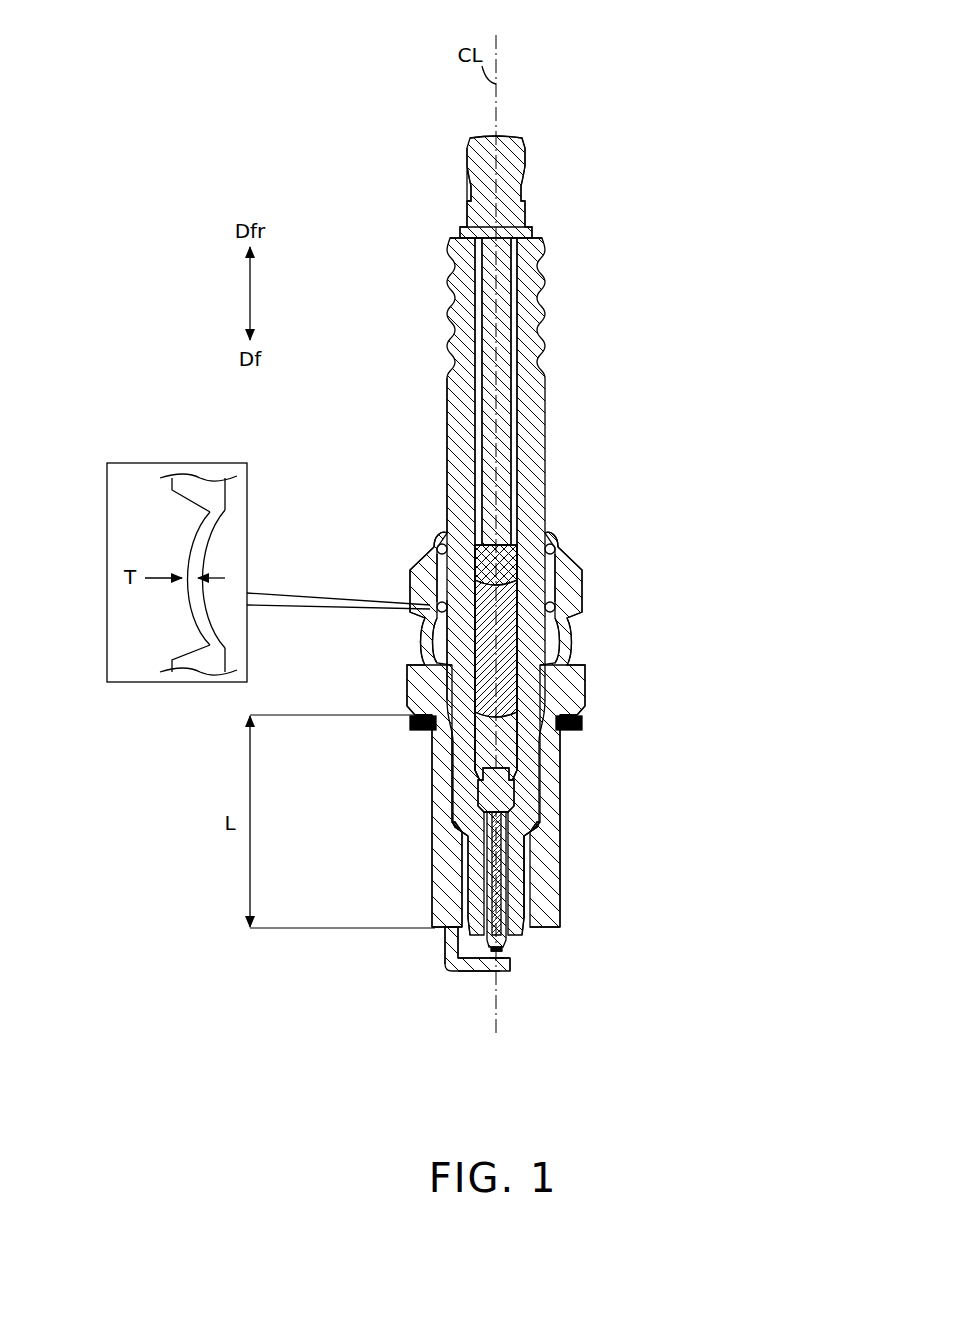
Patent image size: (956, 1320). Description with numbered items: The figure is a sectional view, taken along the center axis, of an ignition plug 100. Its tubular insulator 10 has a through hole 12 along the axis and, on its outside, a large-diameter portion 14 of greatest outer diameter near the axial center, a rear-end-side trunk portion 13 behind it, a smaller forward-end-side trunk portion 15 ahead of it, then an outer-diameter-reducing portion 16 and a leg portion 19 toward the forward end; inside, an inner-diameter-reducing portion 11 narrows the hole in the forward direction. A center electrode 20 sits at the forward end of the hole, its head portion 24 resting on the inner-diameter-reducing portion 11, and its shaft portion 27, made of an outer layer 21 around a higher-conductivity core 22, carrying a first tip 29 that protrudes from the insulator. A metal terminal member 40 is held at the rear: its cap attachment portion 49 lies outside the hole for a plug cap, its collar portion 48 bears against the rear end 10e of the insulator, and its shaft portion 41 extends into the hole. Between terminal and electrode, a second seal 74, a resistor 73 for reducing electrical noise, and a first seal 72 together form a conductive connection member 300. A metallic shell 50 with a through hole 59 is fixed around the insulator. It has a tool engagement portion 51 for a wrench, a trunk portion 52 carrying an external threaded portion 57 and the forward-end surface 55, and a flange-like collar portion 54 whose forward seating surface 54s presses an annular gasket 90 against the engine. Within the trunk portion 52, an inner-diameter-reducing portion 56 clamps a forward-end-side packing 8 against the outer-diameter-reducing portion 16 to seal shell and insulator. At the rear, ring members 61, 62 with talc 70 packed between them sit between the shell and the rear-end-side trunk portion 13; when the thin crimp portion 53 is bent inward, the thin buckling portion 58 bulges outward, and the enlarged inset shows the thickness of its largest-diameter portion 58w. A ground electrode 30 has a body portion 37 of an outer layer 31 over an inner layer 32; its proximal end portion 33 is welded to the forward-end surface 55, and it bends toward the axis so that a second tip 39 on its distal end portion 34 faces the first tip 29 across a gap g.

The ignition plug 100 is at (372, 108).
The insulator 10 is at (548, 355).
The rear end of insulator 10e is at (535, 238).
The through hole 12 is at (478, 458).
The rear-end-side trunk portion 13 is at (449, 467).
The large-diameter portion 14 is at (447, 640).
The forward-end-side trunk portion 15 is at (455, 776).
The inner-diameter-reducing portion 11 is at (453, 826).
The outer-diameter-reducing portion 16 is at (531, 832).
The leg portion 19 is at (525, 855).
The metal terminal member 40 is at (372, 205).
The cap attachment portion 49 is at (477, 212).
The collar portion 48 is at (470, 232).
The shaft portion 41 is at (482, 262).
The connection member 300 is at (685, 605).
The second seal 74 is at (520, 578).
The resistor 73 is at (545, 680).
The first seal 72 is at (518, 770).
The center electrode 20 is at (486, 900).
The head portion 24 is at (478, 800).
The core 22 is at (507, 905).
The outer layer 21 is at (501, 880).
The first tip 29 is at (498, 941).
The metallic shell 50 is at (420, 546).
The crimp portion 53 is at (446, 534).
The tool engagement portion 51 is at (412, 582).
The talc 70 is at (438, 566).
The ring member 61 is at (438, 545).
The ring member 62 is at (438, 607).
The buckling portion 58 is at (423, 644).
The largest-outer-diameter portion of buckling portion 58w is at (193, 592).
The through hole of metallic shell 59 is at (428, 690).
The collar portion 54 is at (408, 706).
The seating surface 54s is at (430, 736).
The threaded portion 57 is at (436, 786).
The shaft portion 27 is at (446, 858).
The trunk portion 52 is at (434, 918).
The forward-end surface 55 is at (438, 930).
The inner-diameter-reducing portion 56 is at (540, 800).
The forward-end-side packing 8 is at (538, 818).
The gasket 90 is at (578, 728).
The ground electrode 30 is at (447, 976).
The outer layer 31 is at (472, 972).
The inner layer 32 is at (455, 972).
The proximal end portion 33 is at (452, 946).
The body portion 37 is at (490, 976).
The distal end portion 34 is at (506, 978).
The second tip 39 is at (512, 966).
The gap g is at (504, 953).